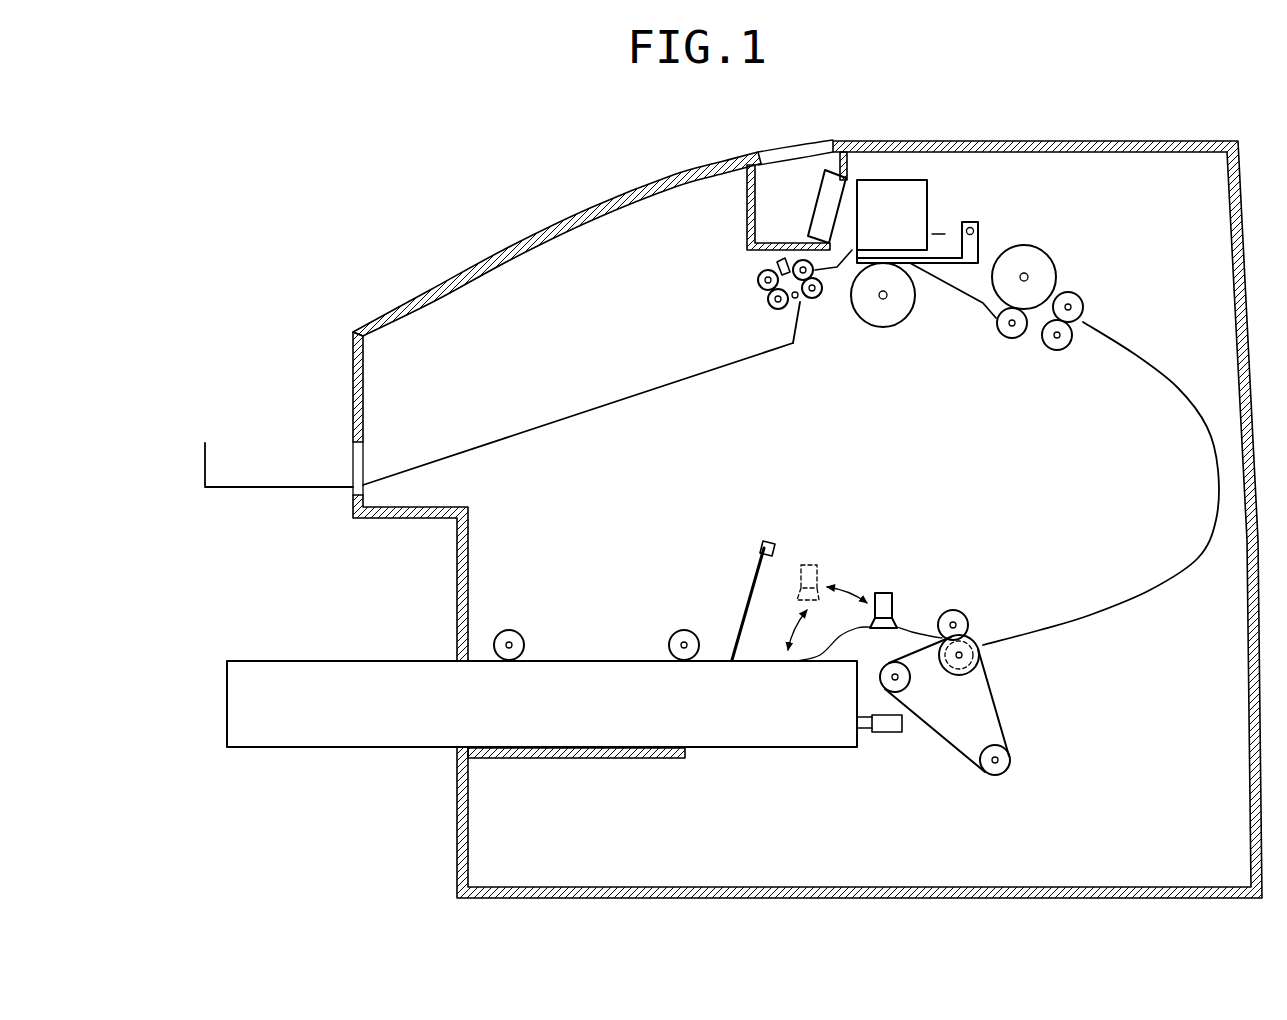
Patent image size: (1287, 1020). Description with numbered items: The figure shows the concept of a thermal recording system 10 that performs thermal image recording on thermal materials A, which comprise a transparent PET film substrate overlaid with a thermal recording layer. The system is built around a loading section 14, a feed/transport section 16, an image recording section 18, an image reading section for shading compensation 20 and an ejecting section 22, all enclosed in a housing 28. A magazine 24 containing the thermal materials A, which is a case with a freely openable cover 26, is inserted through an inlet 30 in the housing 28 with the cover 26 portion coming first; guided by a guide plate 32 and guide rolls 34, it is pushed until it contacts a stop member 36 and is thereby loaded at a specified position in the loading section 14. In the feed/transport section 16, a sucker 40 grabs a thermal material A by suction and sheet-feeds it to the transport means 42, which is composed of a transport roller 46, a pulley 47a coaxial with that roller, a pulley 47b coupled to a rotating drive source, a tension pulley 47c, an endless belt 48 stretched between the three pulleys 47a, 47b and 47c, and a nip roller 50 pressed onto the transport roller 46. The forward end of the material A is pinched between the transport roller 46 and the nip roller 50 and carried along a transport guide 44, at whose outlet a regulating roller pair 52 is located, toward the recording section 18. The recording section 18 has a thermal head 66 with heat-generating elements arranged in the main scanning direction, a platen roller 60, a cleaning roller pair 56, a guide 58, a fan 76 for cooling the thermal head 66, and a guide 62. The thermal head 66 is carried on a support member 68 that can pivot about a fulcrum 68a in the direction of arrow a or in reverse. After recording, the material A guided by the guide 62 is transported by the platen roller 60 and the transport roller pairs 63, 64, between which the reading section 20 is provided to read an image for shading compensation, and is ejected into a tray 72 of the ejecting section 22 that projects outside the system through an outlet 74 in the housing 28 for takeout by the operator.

The thermal recording system 10 is at (428, 195).
The loading section 14 is at (606, 583).
The feed/transport section 16 is at (1022, 472).
The image recording section 18 is at (878, 357).
The image reading section for shading compensation 20 is at (765, 262).
The ejecting section 22 is at (585, 350).
The magazine 24 is at (745, 740).
The cover 26 is at (753, 577).
The housing 28 is at (605, 192).
The inlet 30 is at (442, 640).
The guide plate 32 is at (562, 760).
The guide rolls 34 is at (510, 630).
The stop member 36 is at (882, 735).
The sucker 40 is at (886, 594).
The thermal material A is at (910, 630).
The transport means 42 is at (1035, 745).
The transport guide 44 is at (1173, 373).
The transport roller 46 is at (953, 669).
The pulley 47a is at (983, 660).
The pulley 47b is at (1000, 772).
The tension pulley 47c is at (910, 690).
The endless belt 48 is at (1003, 700).
The nip roller 50 is at (972, 622).
The regulating roller pair 52 is at (1083, 307).
The cleaning roller pair 56 is at (1006, 338).
The guide 58 is at (963, 297).
The platen roller 60 is at (896, 324).
The guide 62 is at (835, 270).
The transport roller pair 63 is at (808, 310).
The transport roller pair 64 is at (767, 307).
The thermal head 66 is at (912, 198).
The support member 68 is at (980, 247).
The fulcrum 68a is at (978, 227).
The arrow a is at (937, 233).
The tray 72 is at (617, 407).
The outlet 74 is at (375, 463).
The fan 76 is at (853, 180).